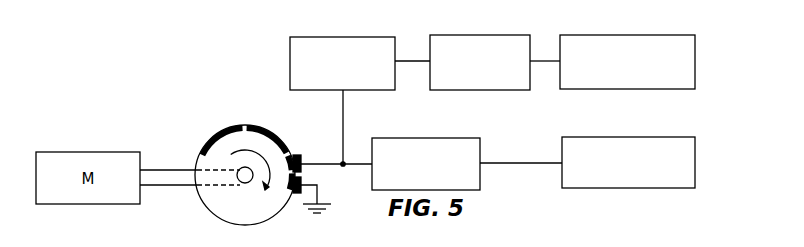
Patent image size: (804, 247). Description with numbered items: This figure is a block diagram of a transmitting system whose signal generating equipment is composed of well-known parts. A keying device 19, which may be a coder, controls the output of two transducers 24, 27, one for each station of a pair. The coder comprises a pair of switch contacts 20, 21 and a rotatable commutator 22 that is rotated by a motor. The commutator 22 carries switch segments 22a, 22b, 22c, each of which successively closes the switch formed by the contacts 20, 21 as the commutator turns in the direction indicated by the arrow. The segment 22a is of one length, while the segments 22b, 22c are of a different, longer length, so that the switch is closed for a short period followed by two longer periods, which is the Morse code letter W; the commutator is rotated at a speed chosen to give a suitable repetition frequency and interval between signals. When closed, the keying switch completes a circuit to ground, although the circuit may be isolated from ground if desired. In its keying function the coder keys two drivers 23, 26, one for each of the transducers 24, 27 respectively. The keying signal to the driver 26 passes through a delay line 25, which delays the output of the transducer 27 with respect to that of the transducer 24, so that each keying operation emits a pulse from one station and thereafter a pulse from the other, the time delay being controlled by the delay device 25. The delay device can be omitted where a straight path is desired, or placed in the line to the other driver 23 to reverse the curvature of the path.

The keying device 19 is at (248, 112).
The switch contact 20 is at (301, 158).
The switch contact 21 is at (302, 181).
The rotatable commutator 22 is at (213, 214).
The switch segment 22a is at (302, 208).
The switch segment 22b is at (278, 144).
The switch segment 22c is at (212, 137).
The driver 23 is at (428, 137).
The transducer 24 is at (650, 138).
The delay line 25 is at (362, 36).
The driver 26 is at (497, 35).
The transducer 27 is at (641, 35).